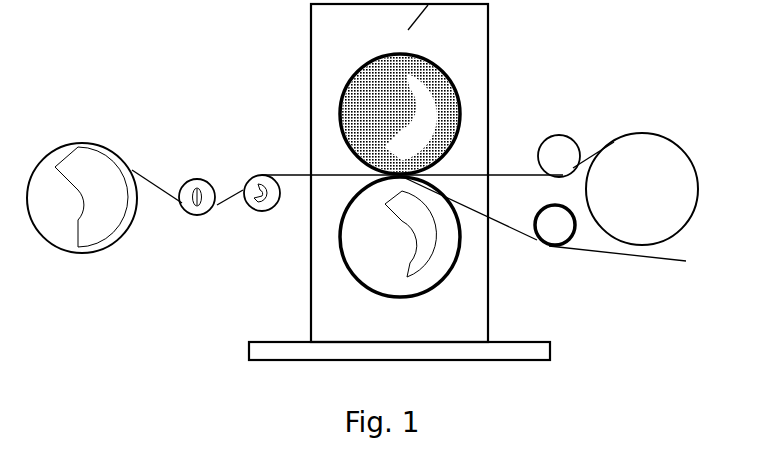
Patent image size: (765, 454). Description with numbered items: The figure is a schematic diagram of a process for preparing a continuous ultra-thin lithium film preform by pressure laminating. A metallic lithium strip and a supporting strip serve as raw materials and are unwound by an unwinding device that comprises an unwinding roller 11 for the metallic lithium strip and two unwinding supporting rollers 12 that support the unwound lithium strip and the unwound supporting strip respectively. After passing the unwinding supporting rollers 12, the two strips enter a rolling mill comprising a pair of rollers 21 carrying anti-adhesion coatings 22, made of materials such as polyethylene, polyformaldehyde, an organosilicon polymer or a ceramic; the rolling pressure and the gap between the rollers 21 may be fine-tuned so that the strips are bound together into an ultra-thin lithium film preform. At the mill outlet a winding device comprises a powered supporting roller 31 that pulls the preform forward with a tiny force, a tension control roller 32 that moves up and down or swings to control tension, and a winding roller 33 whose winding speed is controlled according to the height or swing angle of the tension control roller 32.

The unwinding roller 11 is at (642, 188).
The unwinding supporting rollers 12 is at (555, 225).
The rollers 21 is at (352, 198).
The anti-adhesion coatings 22 is at (453, 197).
The supporting roller 31 is at (257, 212).
The tension control roller 32 is at (200, 177).
The winding roller 33 is at (98, 142).